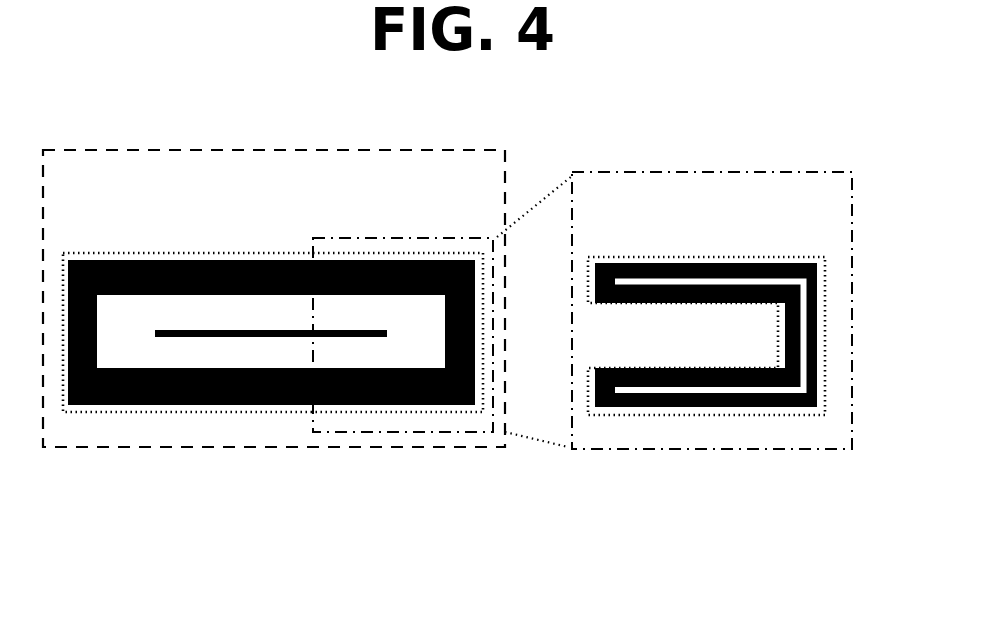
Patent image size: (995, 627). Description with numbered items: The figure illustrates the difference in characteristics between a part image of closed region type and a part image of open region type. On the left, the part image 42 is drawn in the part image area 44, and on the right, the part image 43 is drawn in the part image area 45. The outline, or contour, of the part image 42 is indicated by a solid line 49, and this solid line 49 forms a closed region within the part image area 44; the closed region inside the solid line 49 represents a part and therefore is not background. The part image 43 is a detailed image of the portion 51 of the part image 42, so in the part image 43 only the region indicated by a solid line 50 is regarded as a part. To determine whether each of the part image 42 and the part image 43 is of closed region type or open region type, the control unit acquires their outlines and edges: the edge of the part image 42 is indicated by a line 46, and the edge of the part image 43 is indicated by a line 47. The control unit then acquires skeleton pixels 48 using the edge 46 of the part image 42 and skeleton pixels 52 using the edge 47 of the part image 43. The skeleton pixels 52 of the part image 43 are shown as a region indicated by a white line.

The part image 42 is at (270, 258).
The part image 43 is at (675, 258).
The part image area 44 is at (363, 150).
The part image area 45 is at (743, 173).
The line 46 is at (165, 255).
The line 47 is at (782, 258).
The skeleton pixels 48 is at (235, 405).
The solid line 49 is at (338, 405).
The solid line 50 is at (768, 407).
The portion 51 is at (418, 237).
The skeleton pixels 52 is at (703, 405).